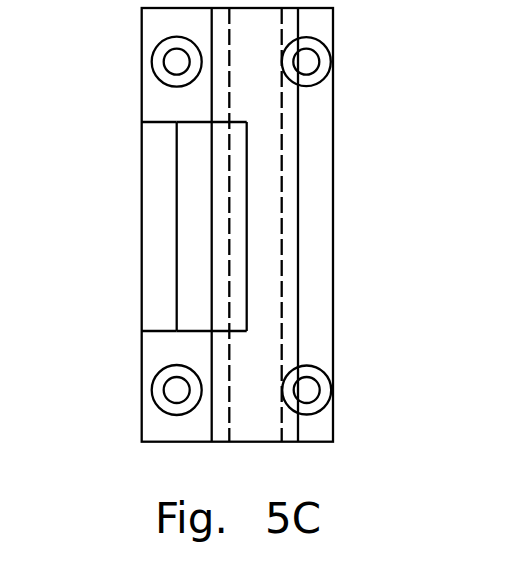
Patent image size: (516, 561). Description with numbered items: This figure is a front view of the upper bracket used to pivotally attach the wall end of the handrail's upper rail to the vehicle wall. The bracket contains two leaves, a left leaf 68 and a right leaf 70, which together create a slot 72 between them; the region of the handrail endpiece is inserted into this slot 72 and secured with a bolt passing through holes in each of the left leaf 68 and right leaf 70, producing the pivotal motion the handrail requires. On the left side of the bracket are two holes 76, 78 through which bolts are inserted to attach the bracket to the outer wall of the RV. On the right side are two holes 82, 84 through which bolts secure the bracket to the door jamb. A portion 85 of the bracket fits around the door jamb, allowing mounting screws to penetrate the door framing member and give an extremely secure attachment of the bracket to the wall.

The left leaf 68 is at (176, 220).
The right leaf 70 is at (246, 204).
The slot 72 is at (211, 254).
The hole 76 is at (160, 372).
The hole 78 is at (167, 81).
The hole 82 is at (318, 367).
The hole 84 is at (310, 86).
The portion of bracket 85 is at (302, 254).